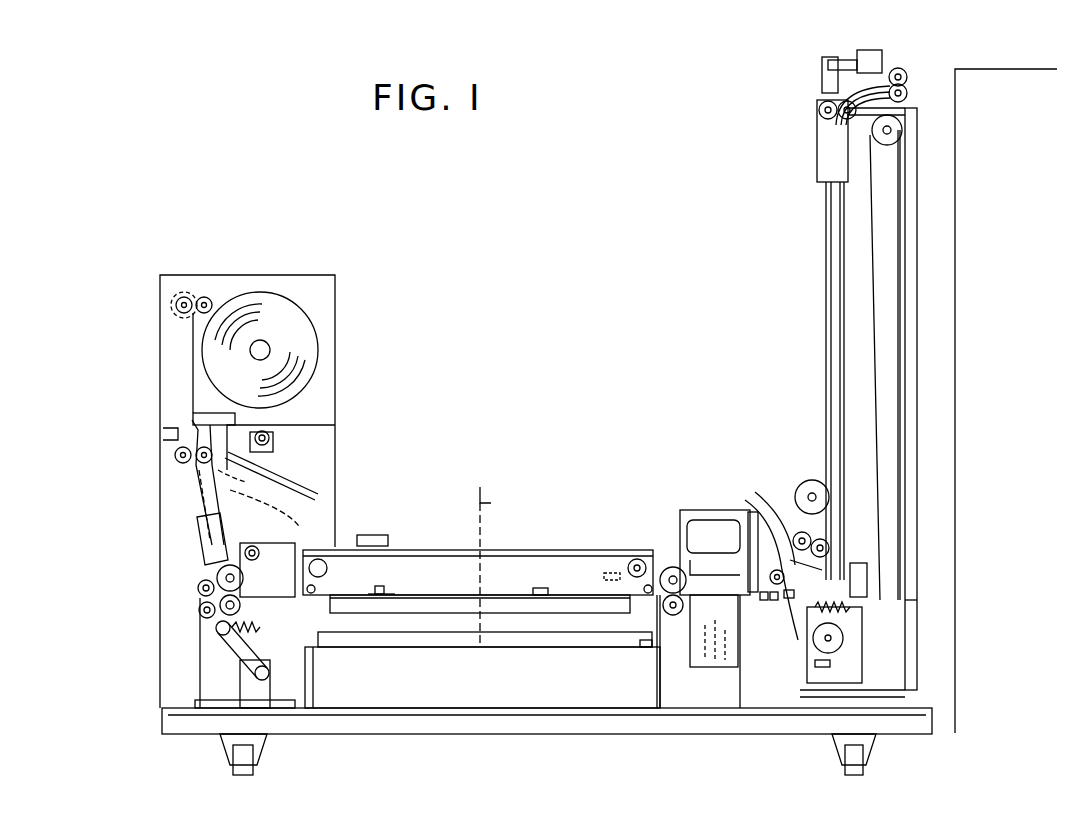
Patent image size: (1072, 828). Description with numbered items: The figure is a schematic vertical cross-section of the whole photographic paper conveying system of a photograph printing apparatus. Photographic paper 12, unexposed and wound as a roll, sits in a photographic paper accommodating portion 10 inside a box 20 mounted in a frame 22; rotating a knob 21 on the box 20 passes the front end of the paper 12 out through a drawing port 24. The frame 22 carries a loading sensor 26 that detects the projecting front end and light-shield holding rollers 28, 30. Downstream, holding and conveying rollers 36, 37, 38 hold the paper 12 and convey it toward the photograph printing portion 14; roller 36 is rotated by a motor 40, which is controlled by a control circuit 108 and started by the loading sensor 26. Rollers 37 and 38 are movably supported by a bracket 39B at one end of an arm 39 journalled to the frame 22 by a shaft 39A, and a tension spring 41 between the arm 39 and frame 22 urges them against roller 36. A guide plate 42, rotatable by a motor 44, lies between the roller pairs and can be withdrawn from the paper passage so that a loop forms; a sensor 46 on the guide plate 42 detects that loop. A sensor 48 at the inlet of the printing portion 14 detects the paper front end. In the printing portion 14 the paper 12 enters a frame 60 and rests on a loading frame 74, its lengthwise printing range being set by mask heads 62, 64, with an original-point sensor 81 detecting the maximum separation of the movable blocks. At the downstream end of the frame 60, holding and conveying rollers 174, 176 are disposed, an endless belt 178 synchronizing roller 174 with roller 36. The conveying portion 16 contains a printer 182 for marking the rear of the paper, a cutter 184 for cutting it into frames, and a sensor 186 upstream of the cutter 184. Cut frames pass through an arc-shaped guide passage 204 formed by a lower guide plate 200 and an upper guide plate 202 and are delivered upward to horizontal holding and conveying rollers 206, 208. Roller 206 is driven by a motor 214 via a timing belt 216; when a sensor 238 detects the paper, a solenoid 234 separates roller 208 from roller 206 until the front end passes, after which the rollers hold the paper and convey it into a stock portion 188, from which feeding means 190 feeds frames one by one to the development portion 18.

The photographic paper accommodating portion 10 is at (336, 296).
The photographic paper 12 is at (276, 300).
The photograph printing portion 14 is at (540, 505).
The conveying portion 16 is at (732, 420).
The development portion 18 is at (1026, 66).
The box 20 is at (232, 275).
The knob 21 is at (180, 296).
The frame 22 is at (336, 428).
The drawing port 24 is at (196, 430).
The loading sensor 26 is at (162, 436).
The light-shield holding roller 28 is at (222, 478).
The light-shield holding roller 30 is at (178, 462).
The holding and conveying roller 36 is at (218, 572).
The holding and conveying roller 37 is at (200, 582).
The holding and conveying roller 38 is at (198, 608).
The arm 39 is at (216, 632).
The shaft 39A is at (250, 676).
The bracket 39B is at (220, 600).
The motor 40 is at (262, 548).
The tension spring 41 is at (298, 652).
The guide plate 42 is at (298, 490).
The motor 44 is at (300, 432).
The sensor 46 is at (220, 500).
The sensor 48 is at (330, 566).
The frame 60 is at (665, 568).
The mask head 62 is at (384, 588).
The mask head 64 is at (560, 586).
The loading frame 74 is at (452, 596).
The original-point sensor 81 is at (604, 572).
The control circuit 108 is at (365, 535).
The holding and conveying roller 174 is at (686, 512).
The holding and conveying roller 176 is at (640, 640).
The endless belt 178 is at (625, 562).
The printer 182 is at (705, 660).
The cutter 184 is at (752, 510).
The sensor 186 is at (664, 612).
The stock portion 188 is at (830, 560).
The feeding means 190 is at (890, 612).
The lower guide plate 200 is at (790, 600).
The upper guide plate 202 is at (765, 602).
The guide passage 204 is at (775, 602).
The holding and conveying roller 206 is at (830, 545).
The holding and conveying roller 208 is at (830, 490).
The motor 214 is at (860, 625).
The timing belt 216 is at (868, 578).
The solenoid 234 is at (765, 490).
The sensor 238 is at (770, 568).